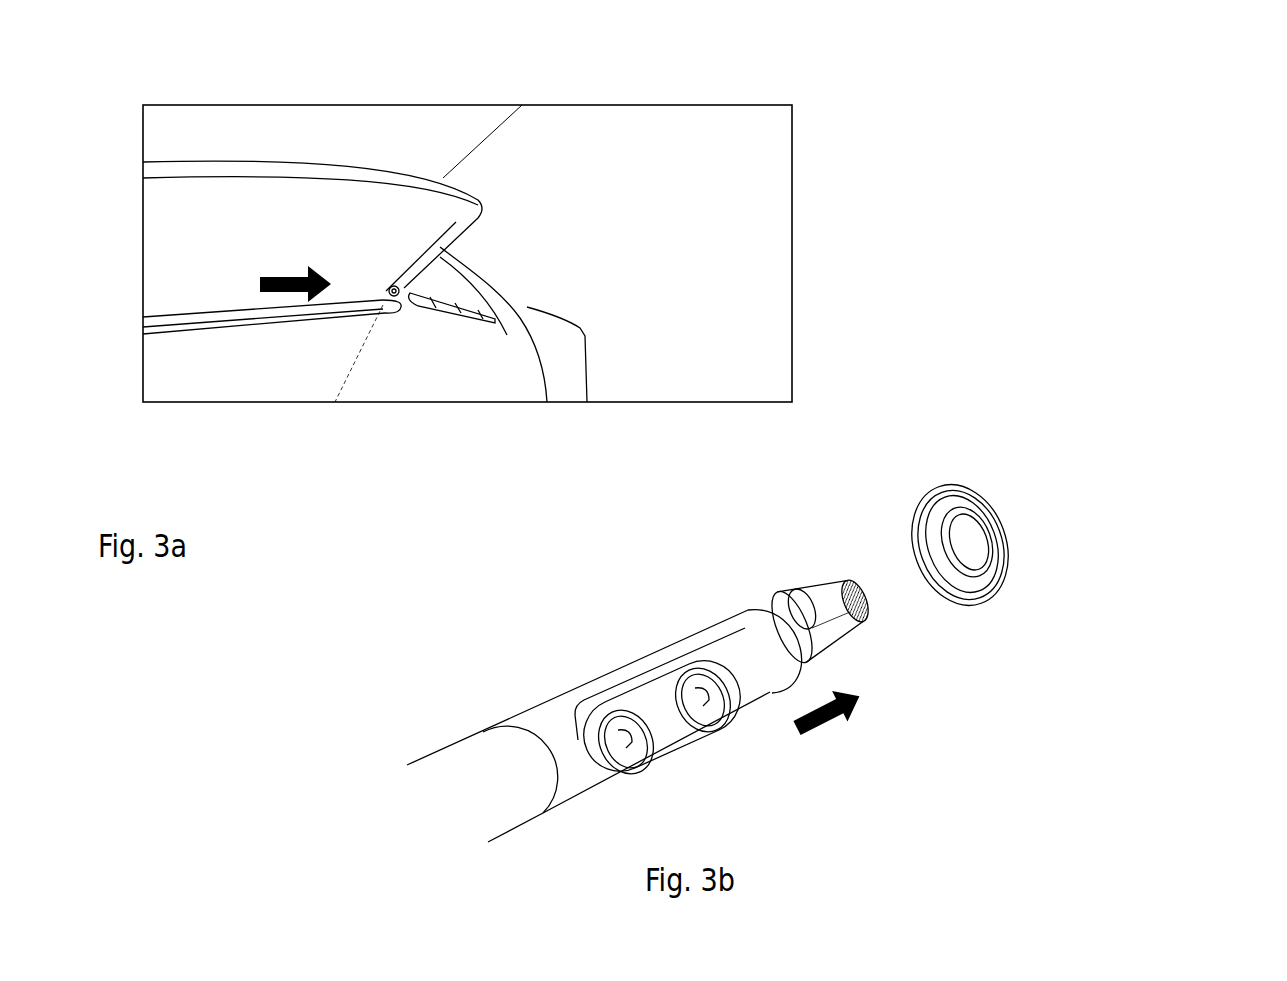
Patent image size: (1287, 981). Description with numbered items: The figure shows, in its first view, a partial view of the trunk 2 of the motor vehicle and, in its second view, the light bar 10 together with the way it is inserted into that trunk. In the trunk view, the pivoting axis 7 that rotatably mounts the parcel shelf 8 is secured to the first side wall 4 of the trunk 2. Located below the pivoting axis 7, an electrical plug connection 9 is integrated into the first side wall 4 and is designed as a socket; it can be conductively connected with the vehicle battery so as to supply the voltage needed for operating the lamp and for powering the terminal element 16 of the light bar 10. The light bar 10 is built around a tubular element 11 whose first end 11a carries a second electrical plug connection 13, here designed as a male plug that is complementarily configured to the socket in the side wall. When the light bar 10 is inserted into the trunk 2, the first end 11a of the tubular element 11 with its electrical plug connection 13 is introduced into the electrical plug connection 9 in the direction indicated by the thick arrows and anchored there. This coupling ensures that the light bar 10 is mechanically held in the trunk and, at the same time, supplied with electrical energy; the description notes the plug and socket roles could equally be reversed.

In FIG. 3A, the trunk 2 is at (301, 393).
In FIG. 3A, the first side wall 4 is at (473, 360).
In FIG. 3B, the first side wall 4 is at (1071, 476).
In FIG. 3A, the pivoting axis 7 is at (408, 289).
In FIG. 3A, the parcel shelf 8 is at (312, 222).
In FIG. 3B, the electrical plug connection 9 is at (984, 486).
In FIG. 3A, the light bar 10 is at (185, 319).
In FIG. 3B, the light bar 10 is at (423, 735).
In FIG. 3B, the tubular element 11 is at (563, 720).
In FIG. 3A, the first end 11a is at (400, 338).
In FIG. 3B, the first end 11a is at (721, 590).
In FIG. 3B, the electrical plug connection 13 is at (873, 612).
In FIG. 3B, the terminal element 16 is at (678, 743).